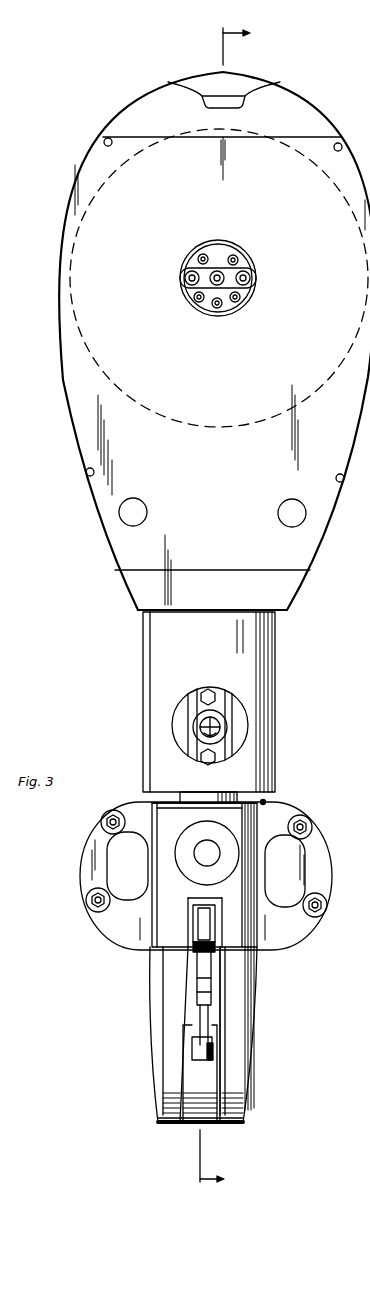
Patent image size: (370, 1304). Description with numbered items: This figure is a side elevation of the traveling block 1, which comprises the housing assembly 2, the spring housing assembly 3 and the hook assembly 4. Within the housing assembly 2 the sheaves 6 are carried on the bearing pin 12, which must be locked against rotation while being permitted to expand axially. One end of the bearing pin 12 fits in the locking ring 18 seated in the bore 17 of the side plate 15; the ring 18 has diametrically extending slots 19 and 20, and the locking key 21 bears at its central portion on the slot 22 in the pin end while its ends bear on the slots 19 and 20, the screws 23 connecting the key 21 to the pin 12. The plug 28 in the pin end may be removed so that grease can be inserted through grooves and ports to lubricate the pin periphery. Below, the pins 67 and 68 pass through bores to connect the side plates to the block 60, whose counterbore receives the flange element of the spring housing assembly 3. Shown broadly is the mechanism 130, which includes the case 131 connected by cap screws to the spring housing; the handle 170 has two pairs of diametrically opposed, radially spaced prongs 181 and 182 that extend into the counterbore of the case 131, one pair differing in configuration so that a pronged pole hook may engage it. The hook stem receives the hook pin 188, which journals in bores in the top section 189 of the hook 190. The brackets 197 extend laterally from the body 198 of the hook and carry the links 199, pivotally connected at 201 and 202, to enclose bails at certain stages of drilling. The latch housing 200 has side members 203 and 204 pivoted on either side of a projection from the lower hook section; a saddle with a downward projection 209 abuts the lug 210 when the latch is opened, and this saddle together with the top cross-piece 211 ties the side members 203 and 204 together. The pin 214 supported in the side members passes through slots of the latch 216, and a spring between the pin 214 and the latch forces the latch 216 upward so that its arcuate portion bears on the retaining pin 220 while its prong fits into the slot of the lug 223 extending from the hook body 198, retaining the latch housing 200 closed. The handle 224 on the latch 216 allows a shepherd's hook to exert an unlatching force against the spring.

The traveling block 1 is at (329, 551).
The housing assembly 2 is at (80, 417).
The spring housing assembly 3 is at (172, 664).
The hook assembly 4 is at (114, 978).
The sheaves 6 is at (220, 430).
The bearing pin 12 is at (231, 305).
The side plate 15 is at (250, 492).
The bore 17 is at (200, 312).
The locking ring 18 is at (213, 316).
The slot 19 is at (184, 275).
The slot 20 is at (256, 286).
The locking key 21 is at (236, 272).
The slot 22 is at (224, 268).
The screws 23 is at (192, 271).
The plug 28 is at (205, 254).
The block 60 is at (230, 592).
The pin 67 is at (140, 508).
The pin 68 is at (283, 516).
The mechanism 130 is at (194, 675).
The case 131 is at (191, 701).
The handle 170 is at (213, 746).
The prongs 181 is at (205, 689).
The prongs 182 is at (200, 727).
The hook pin 188 is at (222, 841).
The top section 189 is at (207, 818).
The hook 190 is at (265, 802).
The brackets 197 is at (110, 925).
The body 198 is at (170, 915).
The links 199 is at (90, 876).
The latch housing 200 is at (220, 1013).
The pivot 201 is at (87, 903).
The pivot 202 is at (101, 822).
The side member 203 is at (180, 1108).
The side member 204 is at (244, 1122).
The downward projection 209 is at (198, 1018).
The lug 210 is at (200, 1048).
The top cross-piece 211 is at (266, 914).
The pin 214 is at (211, 992).
The latch 216 is at (198, 962).
The retaining pin 220 is at (188, 936).
The lug 223 is at (213, 943).
The handle 224 is at (205, 978).